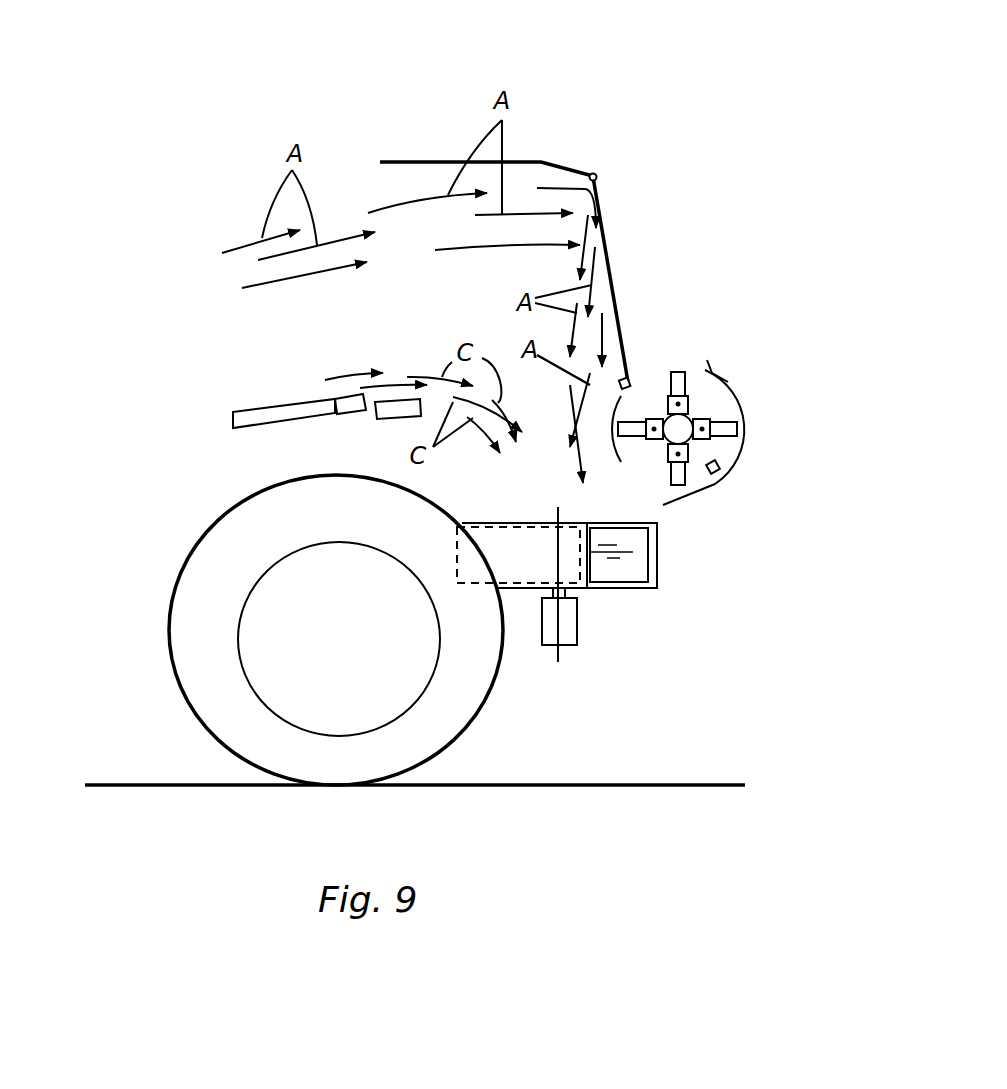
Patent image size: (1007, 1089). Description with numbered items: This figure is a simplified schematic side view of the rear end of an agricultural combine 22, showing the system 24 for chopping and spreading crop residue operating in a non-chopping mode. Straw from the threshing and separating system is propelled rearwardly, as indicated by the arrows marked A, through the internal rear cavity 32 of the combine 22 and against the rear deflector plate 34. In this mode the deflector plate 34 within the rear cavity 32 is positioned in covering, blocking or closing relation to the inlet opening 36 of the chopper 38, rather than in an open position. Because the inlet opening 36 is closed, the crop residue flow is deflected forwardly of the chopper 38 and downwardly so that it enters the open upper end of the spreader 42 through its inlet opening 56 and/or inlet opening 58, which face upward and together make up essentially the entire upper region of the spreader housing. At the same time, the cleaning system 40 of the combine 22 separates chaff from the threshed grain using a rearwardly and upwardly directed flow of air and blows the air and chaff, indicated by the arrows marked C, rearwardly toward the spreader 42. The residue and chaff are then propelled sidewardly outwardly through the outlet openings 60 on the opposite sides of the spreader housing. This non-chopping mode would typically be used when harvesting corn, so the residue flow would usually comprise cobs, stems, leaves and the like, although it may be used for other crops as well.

The agricultural combine 22 is at (723, 90).
The system for chopping and spreading crop residue 24 is at (741, 404).
The internal rear cavity 32 is at (486, 237).
The rear deflector plate 34 is at (608, 265).
The inlet opening 36 is at (690, 367).
The chopper 38 is at (740, 452).
The cleaning system 40 is at (265, 408).
The spreader 42 is at (657, 588).
The inlet opening 56 is at (522, 517).
The inlet opening 58 is at (600, 517).
The outlet openings 60 is at (657, 555).